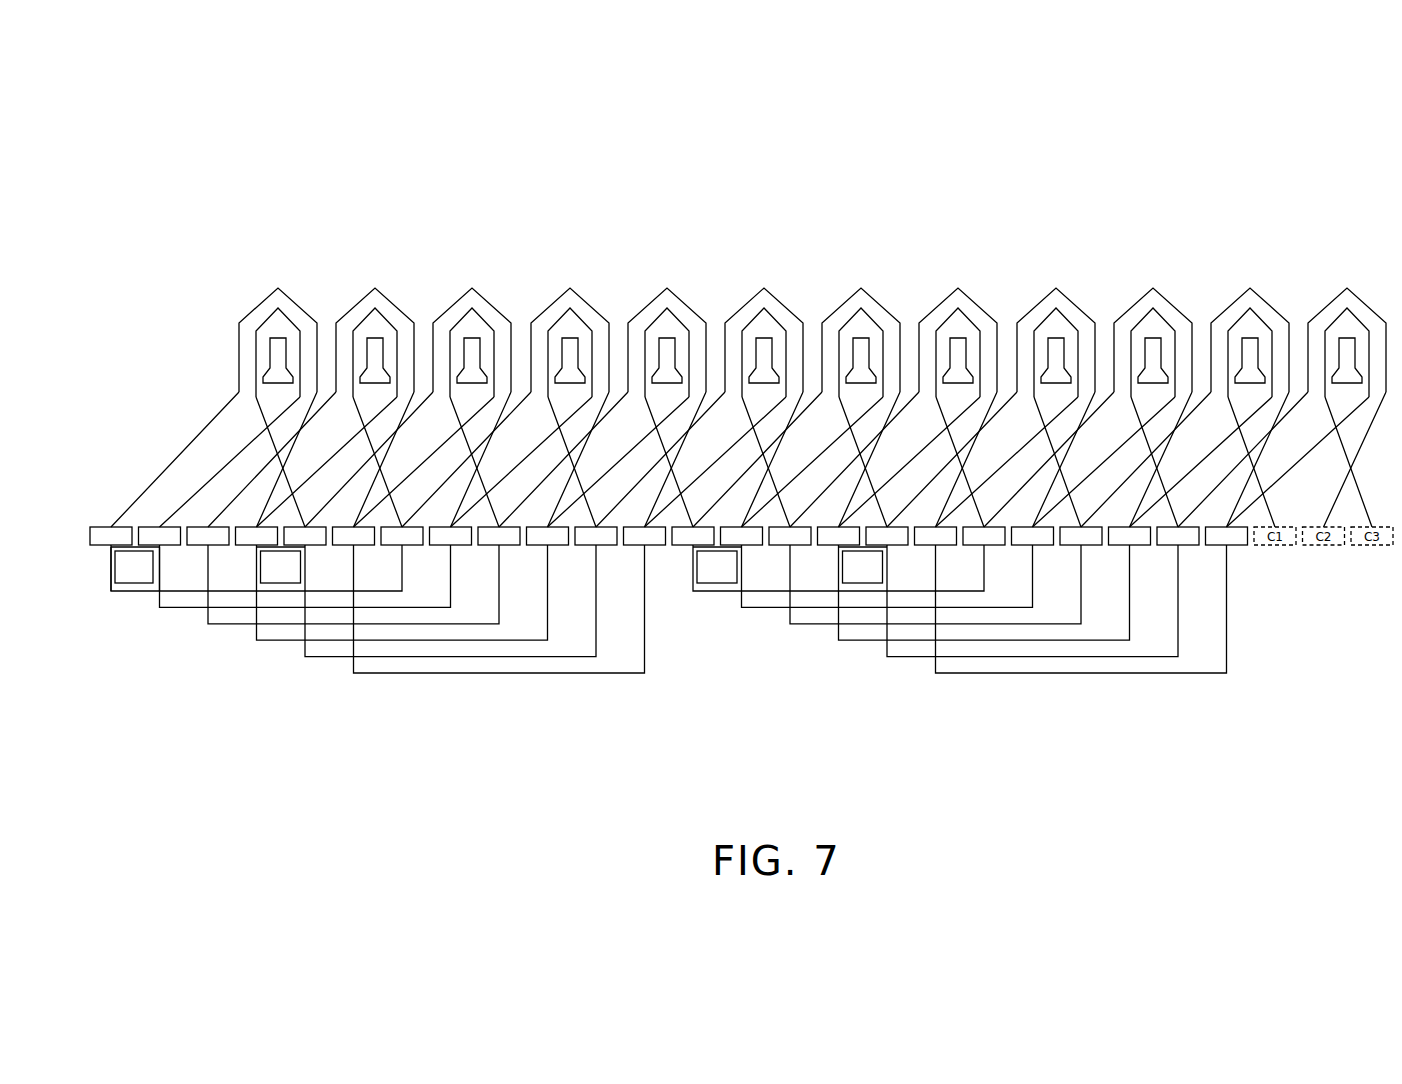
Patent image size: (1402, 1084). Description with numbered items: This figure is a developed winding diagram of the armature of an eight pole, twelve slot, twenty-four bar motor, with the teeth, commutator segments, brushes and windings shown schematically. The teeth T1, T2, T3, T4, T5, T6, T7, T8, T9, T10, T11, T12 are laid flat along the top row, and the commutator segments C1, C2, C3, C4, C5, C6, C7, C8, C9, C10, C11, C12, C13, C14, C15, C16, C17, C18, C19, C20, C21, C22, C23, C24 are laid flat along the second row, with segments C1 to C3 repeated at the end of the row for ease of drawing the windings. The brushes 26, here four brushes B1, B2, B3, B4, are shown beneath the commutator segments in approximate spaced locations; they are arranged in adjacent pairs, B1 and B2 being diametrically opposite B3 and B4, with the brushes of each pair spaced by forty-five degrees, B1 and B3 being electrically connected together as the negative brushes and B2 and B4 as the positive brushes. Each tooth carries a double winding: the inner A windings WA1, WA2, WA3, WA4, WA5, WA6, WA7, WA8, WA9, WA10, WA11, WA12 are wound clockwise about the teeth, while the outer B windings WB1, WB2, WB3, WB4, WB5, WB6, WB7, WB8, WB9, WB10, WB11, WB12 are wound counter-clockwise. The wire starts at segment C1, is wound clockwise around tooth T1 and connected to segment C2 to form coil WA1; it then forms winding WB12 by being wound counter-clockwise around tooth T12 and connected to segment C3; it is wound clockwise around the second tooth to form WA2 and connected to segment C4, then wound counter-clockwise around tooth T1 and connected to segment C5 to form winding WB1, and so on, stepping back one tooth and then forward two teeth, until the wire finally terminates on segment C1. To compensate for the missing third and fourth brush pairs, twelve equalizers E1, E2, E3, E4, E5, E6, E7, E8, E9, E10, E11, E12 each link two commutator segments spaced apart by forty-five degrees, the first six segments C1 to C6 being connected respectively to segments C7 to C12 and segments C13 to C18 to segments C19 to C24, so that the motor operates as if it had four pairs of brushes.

The inner A winding WA1 is at (266, 320).
The inner A winding WA2 is at (363, 320).
The inner A winding WA3 is at (460, 320).
The inner A winding WA4 is at (558, 320).
The inner A winding WA5 is at (655, 320).
The inner A winding WA6 is at (752, 320).
The inner A winding WA7 is at (849, 320).
The inner A winding WA8 is at (946, 320).
The inner A winding WA9 is at (1044, 320).
The inner A winding WA10 is at (1141, 320).
The inner A winding WA11 is at (1238, 320).
The inner A winding WA12 is at (1335, 320).
The outer B winding WB1 is at (294, 298).
The outer B winding WB2 is at (391, 298).
The outer B winding WB3 is at (488, 298).
The outer B winding WB4 is at (586, 298).
The outer B winding WB5 is at (683, 298).
The outer B winding WB6 is at (780, 298).
The outer B winding WB7 is at (877, 298).
The outer B winding WB8 is at (974, 298).
The outer B winding WB9 is at (1072, 298).
The outer B winding WB10 is at (1169, 298).
The outer B winding WB11 is at (1266, 298).
The outer B winding WB12 is at (1363, 298).
The tooth T1 is at (278, 361).
The tooth T2 is at (375, 361).
The tooth T3 is at (472, 361).
The tooth T4 is at (570, 361).
The tooth T5 is at (667, 361).
The tooth T6 is at (764, 361).
The tooth T7 is at (861, 361).
The tooth T8 is at (958, 361).
The tooth T9 is at (1056, 361).
The tooth T10 is at (1153, 361).
The tooth T11 is at (1250, 361).
The tooth T12 is at (1347, 361).
The commutator segment C1 is at (111, 536).
The commutator segment C2 is at (160, 536).
The commutator segment C3 is at (208, 536).
The commutator segment C4 is at (257, 536).
The commutator segment C5 is at (305, 536).
The commutator segment C6 is at (354, 536).
The commutator segment C7 is at (402, 536).
The commutator segment C8 is at (451, 536).
The commutator segment C9 is at (499, 536).
The commutator segment C10 is at (548, 536).
The commutator segment C11 is at (596, 536).
The commutator segment C12 is at (645, 536).
The commutator segment C13 is at (693, 536).
The commutator segment C14 is at (742, 536).
The commutator segment C15 is at (790, 536).
The commutator segment C16 is at (839, 536).
The commutator segment C17 is at (887, 536).
The commutator segment C18 is at (936, 536).
The commutator segment C19 is at (984, 536).
The commutator segment C20 is at (1033, 536).
The commutator segment C21 is at (1081, 536).
The commutator segment C22 is at (1130, 536).
The commutator segment C23 is at (1178, 536).
The commutator segment C24 is at (1227, 536).
The brush B1 is at (135, 565).
The brush B2 is at (281, 565).
The brush B3 is at (717, 565).
The brush B4 is at (863, 565).
The equalizer E1 is at (120, 593).
The equalizer E2 is at (170, 609).
The equalizer E3 is at (223, 625).
The equalizer E4 is at (272, 641).
The equalizer E5 is at (322, 658).
The equalizer E6 is at (377, 674).
The equalizer E7 is at (707, 592).
The equalizer E8 is at (762, 609).
The equalizer E9 is at (807, 625).
The equalizer E10 is at (862, 641).
The equalizer E11 is at (912, 658).
The equalizer E12 is at (983, 674).
The brushes 26 is at (112, 563).